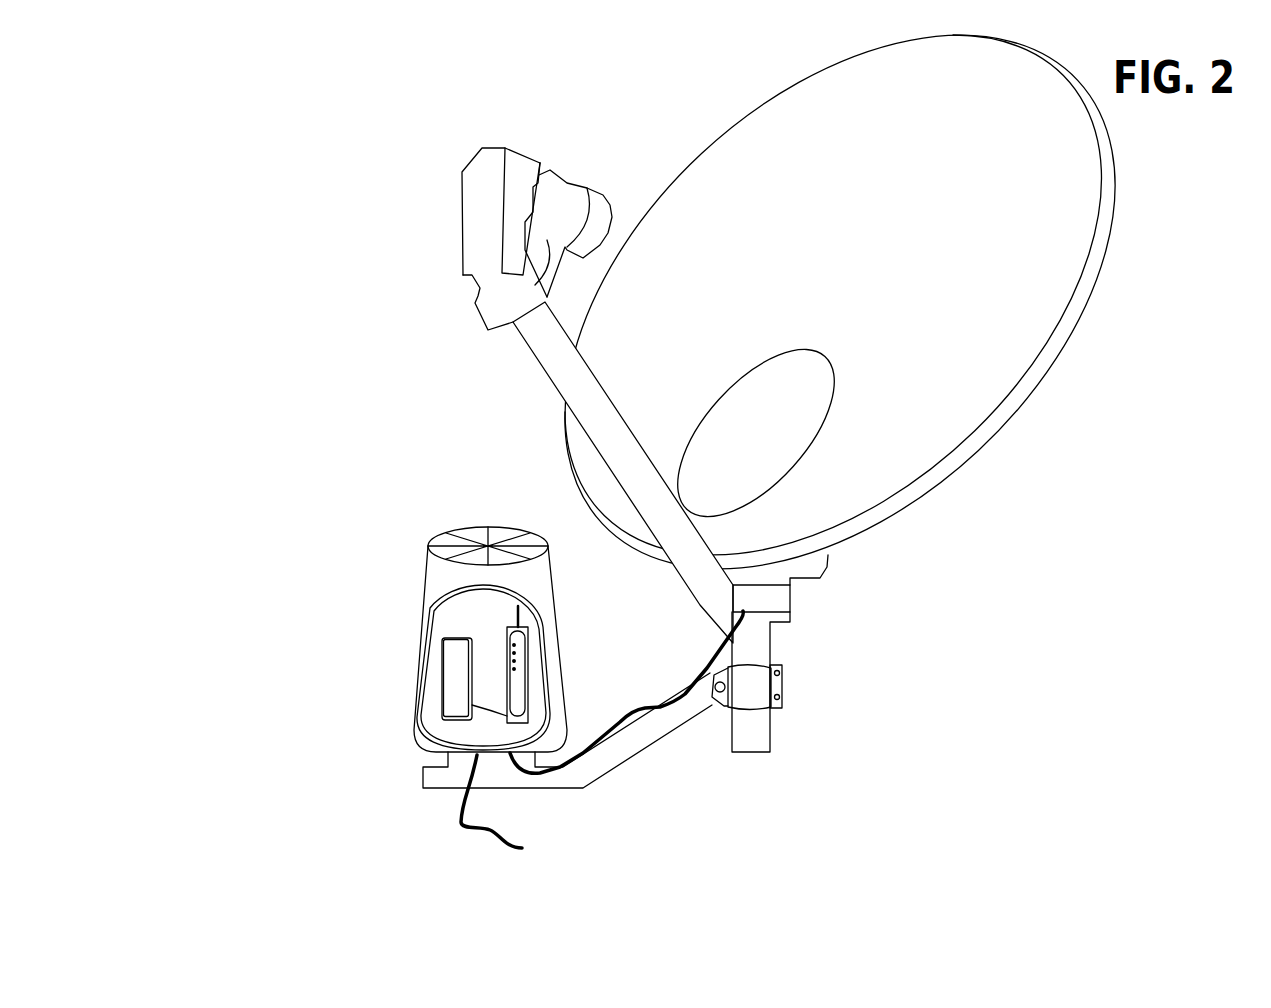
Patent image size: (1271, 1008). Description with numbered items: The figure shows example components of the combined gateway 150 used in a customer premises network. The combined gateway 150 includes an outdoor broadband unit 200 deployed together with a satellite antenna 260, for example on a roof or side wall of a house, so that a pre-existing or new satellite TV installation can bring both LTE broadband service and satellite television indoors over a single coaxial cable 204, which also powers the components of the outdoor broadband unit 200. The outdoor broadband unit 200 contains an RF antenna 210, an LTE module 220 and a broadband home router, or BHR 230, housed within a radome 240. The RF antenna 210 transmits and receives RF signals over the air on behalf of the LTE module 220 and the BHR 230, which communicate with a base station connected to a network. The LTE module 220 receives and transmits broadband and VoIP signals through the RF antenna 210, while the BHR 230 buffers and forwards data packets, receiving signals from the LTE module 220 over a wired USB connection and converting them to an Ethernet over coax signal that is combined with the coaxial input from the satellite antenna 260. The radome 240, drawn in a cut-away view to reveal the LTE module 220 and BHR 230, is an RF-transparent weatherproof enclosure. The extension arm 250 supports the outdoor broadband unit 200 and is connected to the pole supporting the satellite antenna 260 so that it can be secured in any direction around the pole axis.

The combined gateway 150 is at (150, 66).
The outdoor broadband unit 200 is at (483, 567).
The coaxial cable 204 is at (462, 825).
The RF antenna 210 is at (516, 530).
The LTE module 220 is at (442, 677).
The broadband home router (BHR) 230 is at (562, 652).
The radome 240 is at (427, 577).
The extension arm 250 is at (653, 745).
The satellite antenna 260 is at (948, 525).